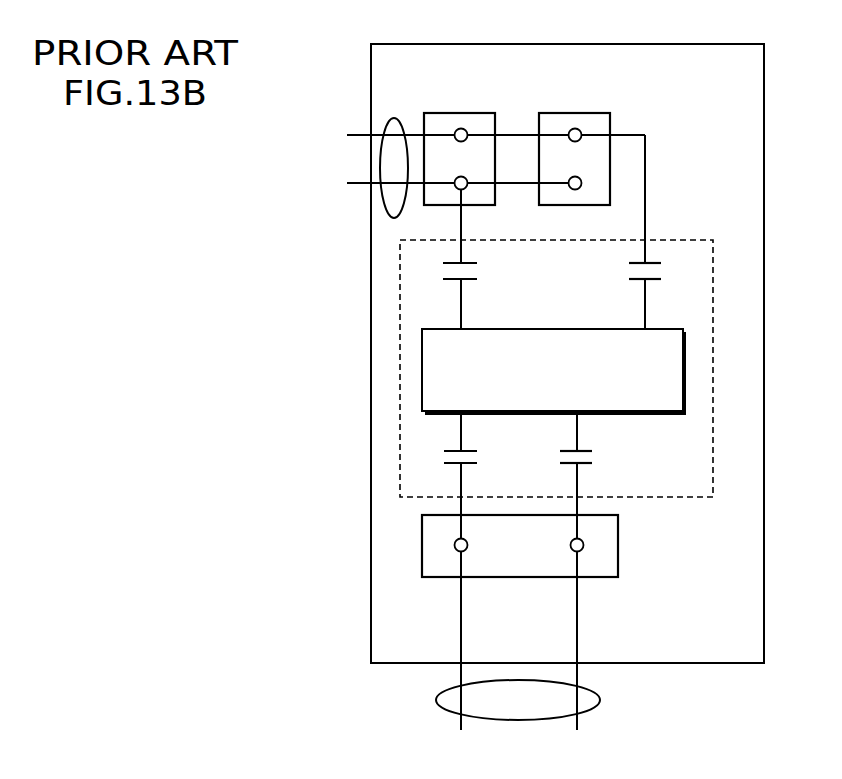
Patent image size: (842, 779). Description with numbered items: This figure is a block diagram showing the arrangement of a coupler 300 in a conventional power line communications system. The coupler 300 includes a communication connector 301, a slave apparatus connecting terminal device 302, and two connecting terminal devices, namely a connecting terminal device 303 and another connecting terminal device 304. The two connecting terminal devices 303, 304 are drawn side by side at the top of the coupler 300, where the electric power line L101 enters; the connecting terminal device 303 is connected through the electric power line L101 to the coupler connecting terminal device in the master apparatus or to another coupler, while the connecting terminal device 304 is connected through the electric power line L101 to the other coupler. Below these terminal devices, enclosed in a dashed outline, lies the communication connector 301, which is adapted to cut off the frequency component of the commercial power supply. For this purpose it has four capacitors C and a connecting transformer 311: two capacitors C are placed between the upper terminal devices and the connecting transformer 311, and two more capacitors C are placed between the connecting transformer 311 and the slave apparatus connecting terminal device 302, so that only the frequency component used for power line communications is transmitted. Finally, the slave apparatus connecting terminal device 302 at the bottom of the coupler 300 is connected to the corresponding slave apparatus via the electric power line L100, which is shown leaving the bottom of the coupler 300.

The coupler 300 is at (707, 665).
The communication connector 301 is at (657, 498).
The slave apparatus connecting terminal device 302 is at (525, 578).
The connecting terminal device 303 is at (458, 113).
The connecting terminal device 304 is at (597, 113).
The connecting transformer 311 is at (620, 414).
The electric power line L100 is at (600, 702).
The electric power line L101 is at (393, 118).
The capacitor C is at (468, 280).